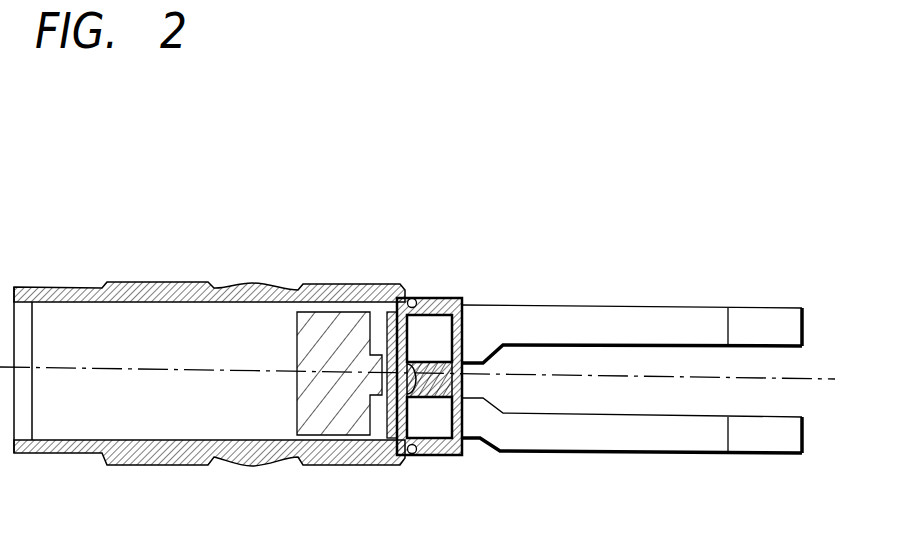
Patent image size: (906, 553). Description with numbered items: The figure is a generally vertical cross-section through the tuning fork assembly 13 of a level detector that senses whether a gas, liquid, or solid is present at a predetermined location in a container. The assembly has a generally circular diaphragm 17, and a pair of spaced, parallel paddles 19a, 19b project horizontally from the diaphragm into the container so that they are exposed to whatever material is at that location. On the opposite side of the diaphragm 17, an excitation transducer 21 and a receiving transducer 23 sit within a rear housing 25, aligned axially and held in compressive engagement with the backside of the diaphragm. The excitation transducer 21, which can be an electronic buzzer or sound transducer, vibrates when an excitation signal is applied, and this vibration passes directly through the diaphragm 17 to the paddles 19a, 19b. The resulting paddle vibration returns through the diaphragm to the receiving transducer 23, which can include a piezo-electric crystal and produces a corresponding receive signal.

The tuning fork assembly 13 is at (582, 337).
The diaphragm 17 is at (464, 328).
The paddle 19a is at (688, 315).
The paddle 19b is at (690, 435).
The excitation transducer 21 is at (340, 322).
The receiving transducer 23 is at (392, 415).
The rear housing 25 is at (248, 287).